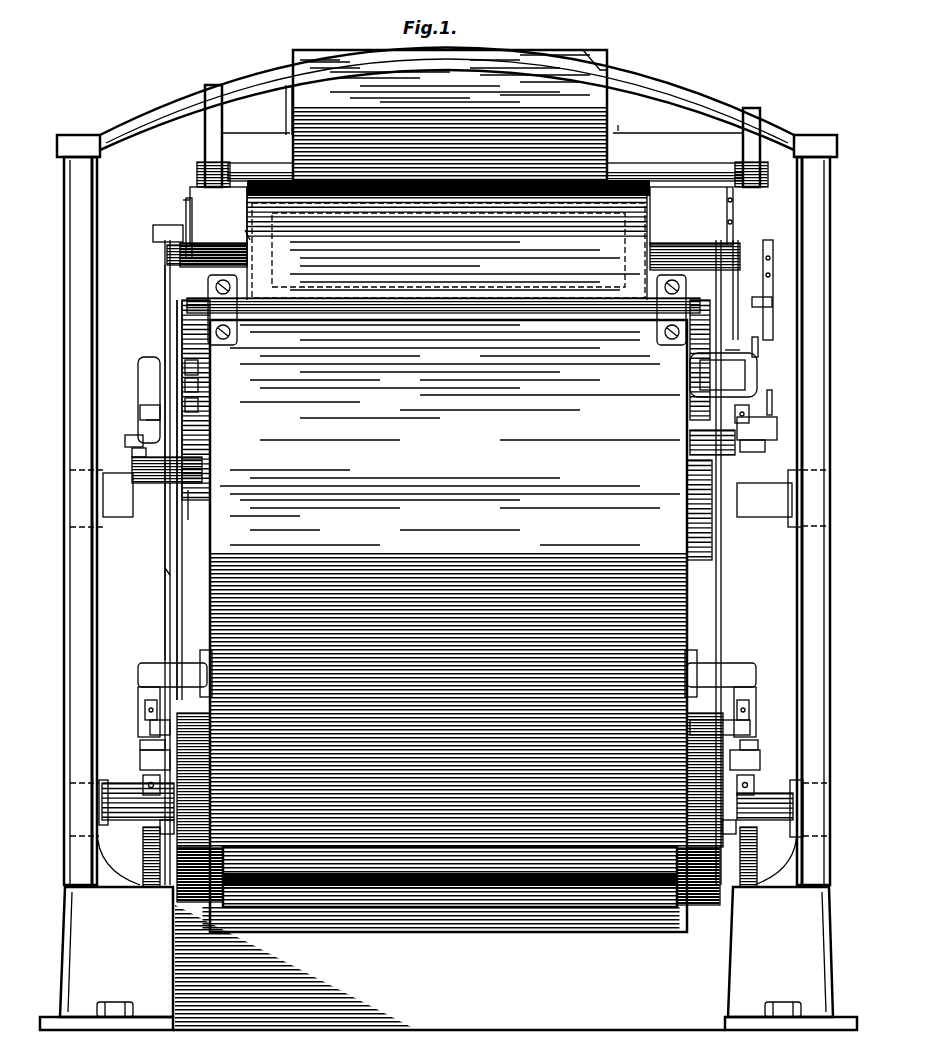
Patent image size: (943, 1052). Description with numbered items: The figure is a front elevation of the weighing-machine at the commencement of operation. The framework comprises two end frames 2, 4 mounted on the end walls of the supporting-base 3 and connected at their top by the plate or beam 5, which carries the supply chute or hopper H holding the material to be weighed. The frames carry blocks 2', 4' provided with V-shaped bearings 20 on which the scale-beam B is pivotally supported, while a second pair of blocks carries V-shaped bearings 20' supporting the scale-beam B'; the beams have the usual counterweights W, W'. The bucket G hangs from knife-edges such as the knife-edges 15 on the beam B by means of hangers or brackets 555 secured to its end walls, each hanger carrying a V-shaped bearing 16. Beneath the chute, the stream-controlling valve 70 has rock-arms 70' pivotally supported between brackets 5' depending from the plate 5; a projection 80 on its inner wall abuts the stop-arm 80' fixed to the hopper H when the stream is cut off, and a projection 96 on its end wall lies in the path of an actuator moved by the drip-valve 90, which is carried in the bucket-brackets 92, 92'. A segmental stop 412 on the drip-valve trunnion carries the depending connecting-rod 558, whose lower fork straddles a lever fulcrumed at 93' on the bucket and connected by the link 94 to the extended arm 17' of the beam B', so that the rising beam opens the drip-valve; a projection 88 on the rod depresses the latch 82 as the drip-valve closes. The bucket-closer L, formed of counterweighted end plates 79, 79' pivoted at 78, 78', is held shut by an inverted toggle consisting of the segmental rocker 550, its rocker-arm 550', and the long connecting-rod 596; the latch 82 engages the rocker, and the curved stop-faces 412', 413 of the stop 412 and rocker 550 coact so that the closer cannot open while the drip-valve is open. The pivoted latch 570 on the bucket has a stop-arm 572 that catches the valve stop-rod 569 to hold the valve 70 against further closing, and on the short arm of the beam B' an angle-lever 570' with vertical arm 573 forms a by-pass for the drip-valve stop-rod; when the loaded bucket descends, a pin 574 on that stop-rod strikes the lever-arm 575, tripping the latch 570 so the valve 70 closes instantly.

The end frame 2 is at (106, 593).
The block 2' is at (108, 810).
The supporting-base 3 is at (453, 1017).
The end frame 4 is at (791, 593).
The block 4' is at (783, 821).
The top plate or beam 5 is at (447, 103).
The arms or brackets 5' is at (468, 136).
The knife-edges 15 is at (140, 750).
The V-shaped bearings 16 is at (128, 439).
The extended arm 17' is at (131, 418).
The V-shaped bearings 20 is at (449, 617).
The V-shaped bearings 20' is at (120, 463).
The stream-controlling valve 70 is at (675, 153).
The rock-arm 70' is at (258, 157).
The pivot 78 is at (138, 839).
The pivot 78' is at (746, 864).
The counterweighted end plate 79 is at (213, 901).
The counterweighted end plate 79' is at (701, 901).
The projection 80 is at (447, 243).
The stop-arm 80' is at (270, 110).
The latch 82 is at (198, 410).
The projection 88 is at (170, 378).
The drip-valve 90 is at (654, 247).
The bucket-bracket 92 is at (213, 241).
The bucket-bracket 92' is at (695, 245).
The pivot 93' is at (152, 487).
The link 94 is at (132, 452).
The projection 96 is at (247, 232).
The segmental member or valve-operative stop 412 is at (154, 228).
The curved stop-face 412' is at (153, 191).
The curved stop-face 413 is at (198, 385).
The segmental rocker 550 is at (144, 500).
The rocker-arm 550' is at (136, 462).
The hangers or brackets 555 is at (146, 358).
The connecting-rod 558 is at (167, 258).
The valve stop-rod 569 is at (742, 244).
The latch or lever 570 is at (688, 382).
The angle-lever 570' is at (691, 444).
The latch stop-arm 572 is at (733, 355).
The vertical arm 573 is at (764, 398).
The pin or lateral projection 574 is at (772, 301).
The lever-arm 575 is at (757, 348).
The connecting-rod 596 is at (168, 574).
The scale-beam B is at (442, 742).
The scale-beam B' is at (448, 416).
The bucket G is at (448, 626).
The supply chute or hopper H is at (598, 64).
The bucket-closer L is at (657, 890).
The counterweight W is at (424, 681).
The counterweight W' is at (192, 510).